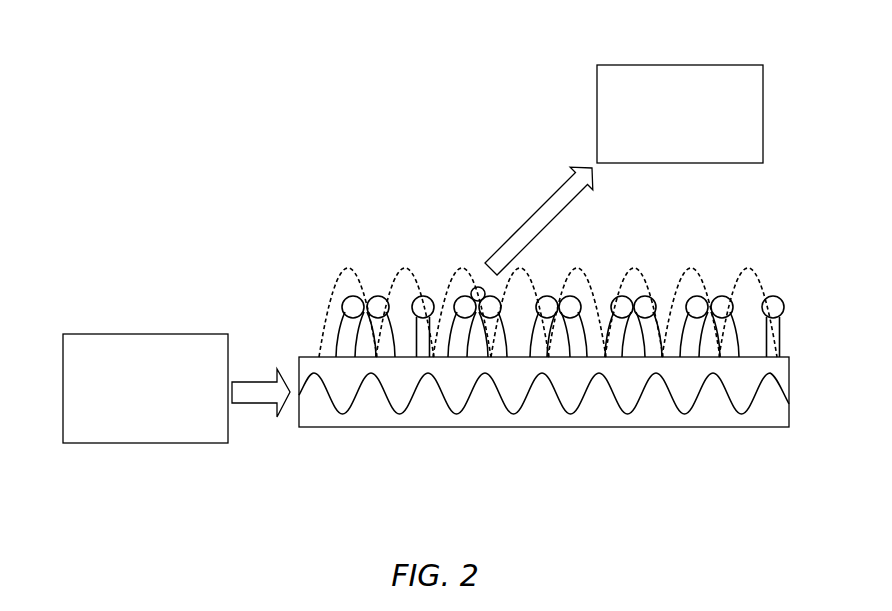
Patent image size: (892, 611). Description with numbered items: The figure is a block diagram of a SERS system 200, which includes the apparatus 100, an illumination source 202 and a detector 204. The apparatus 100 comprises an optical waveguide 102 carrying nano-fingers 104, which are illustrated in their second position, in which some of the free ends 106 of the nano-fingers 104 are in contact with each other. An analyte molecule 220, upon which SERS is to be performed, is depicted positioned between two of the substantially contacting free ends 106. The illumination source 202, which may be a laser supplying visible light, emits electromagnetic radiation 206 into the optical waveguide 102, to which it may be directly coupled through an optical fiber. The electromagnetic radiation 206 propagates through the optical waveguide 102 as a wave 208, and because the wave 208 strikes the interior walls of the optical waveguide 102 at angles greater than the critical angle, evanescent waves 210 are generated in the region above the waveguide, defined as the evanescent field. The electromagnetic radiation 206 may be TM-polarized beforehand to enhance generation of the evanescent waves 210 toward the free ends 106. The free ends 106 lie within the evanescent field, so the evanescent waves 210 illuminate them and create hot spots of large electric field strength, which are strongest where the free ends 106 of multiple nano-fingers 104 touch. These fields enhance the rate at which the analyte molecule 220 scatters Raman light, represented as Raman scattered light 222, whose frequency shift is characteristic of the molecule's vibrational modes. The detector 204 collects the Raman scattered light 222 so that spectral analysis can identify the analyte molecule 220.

The apparatus 100 is at (282, 497).
The optical waveguide 102 is at (687, 427).
The nano-fingers 104 is at (338, 327).
The free ends 106 is at (501, 300).
The SERS system 200 is at (218, 141).
The illumination source 202 is at (145, 388).
The detector 204 is at (680, 114).
The electromagnetic radiation 206 is at (263, 407).
The wave 208 is at (403, 417).
The evanescent waves 210 is at (342, 268).
The analyte molecule 220 is at (473, 288).
The Raman scattered light 222 is at (548, 192).